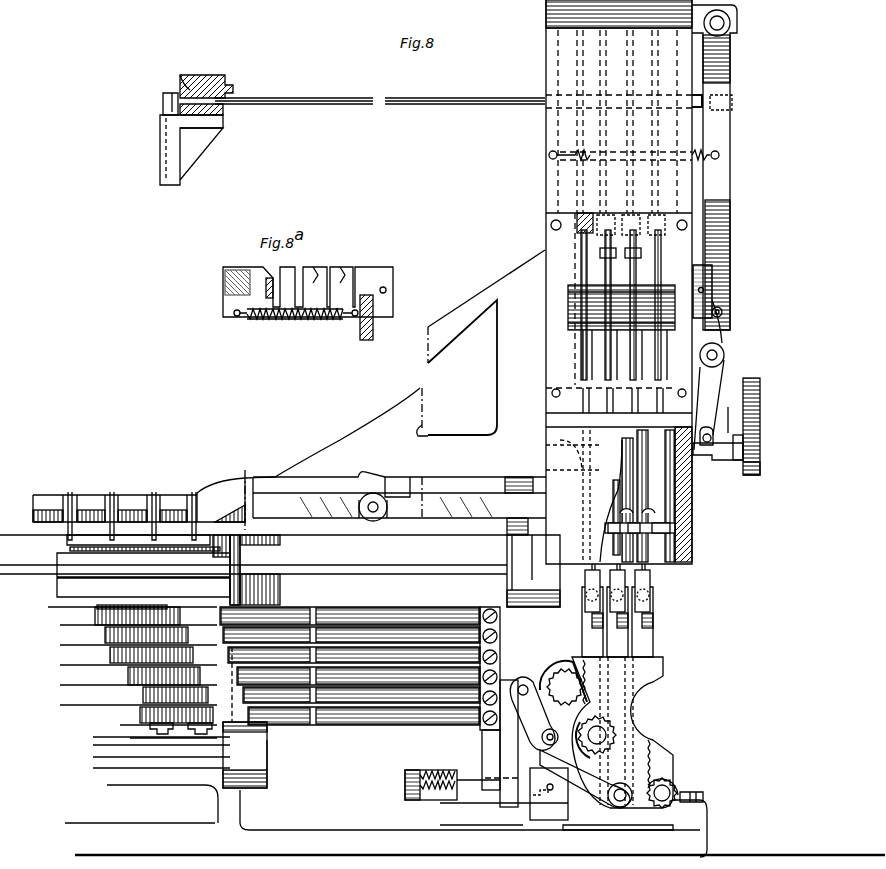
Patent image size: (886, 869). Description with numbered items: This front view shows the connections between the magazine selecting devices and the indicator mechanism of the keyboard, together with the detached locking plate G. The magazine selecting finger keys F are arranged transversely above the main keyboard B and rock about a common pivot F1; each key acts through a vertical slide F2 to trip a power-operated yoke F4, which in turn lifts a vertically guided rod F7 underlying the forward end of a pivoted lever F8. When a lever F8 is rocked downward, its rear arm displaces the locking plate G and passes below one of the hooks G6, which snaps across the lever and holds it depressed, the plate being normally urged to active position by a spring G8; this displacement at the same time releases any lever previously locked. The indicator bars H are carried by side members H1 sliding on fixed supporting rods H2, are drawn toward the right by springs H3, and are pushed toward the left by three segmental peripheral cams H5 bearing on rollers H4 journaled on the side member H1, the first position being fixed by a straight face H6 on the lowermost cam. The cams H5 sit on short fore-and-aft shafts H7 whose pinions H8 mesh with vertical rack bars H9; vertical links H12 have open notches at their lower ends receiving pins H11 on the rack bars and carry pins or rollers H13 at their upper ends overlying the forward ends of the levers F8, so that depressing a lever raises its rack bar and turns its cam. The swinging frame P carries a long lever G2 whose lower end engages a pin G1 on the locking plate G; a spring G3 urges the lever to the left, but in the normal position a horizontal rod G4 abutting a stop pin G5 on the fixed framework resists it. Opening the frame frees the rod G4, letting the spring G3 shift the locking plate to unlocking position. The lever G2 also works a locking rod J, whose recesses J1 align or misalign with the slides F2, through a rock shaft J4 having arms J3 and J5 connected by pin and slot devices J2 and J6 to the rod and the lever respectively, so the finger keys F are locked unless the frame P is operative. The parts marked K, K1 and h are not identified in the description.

In FIG. 8, the swinging frame P is at (205, 84).
In FIG. 8, the locking plate G is at (706, 280).
In FIG. 8A, the locking plate G is at (388, 273).
In FIG. 8, the pin G1 is at (705, 292).
In FIG. 8, the long lever G2 is at (718, 217).
In FIG. 8, the spring G3 is at (700, 152).
In FIG. 8, the horizontal rod G4 is at (440, 104).
In FIG. 8, the stop pin G5 is at (163, 105).
In FIG. 8A, the hooks G6 is at (313, 270).
In FIG. 8A, the spring G8 is at (290, 321).
In FIG. 8, the finger keys F is at (165, 498).
In FIG. 8, the common pivot F1 is at (368, 505).
In FIG. 8, the vertical slides F2 is at (630, 403).
In FIG. 8, the power-operated yokes F4 is at (607, 373).
In FIG. 8, the vertically guided rods F7 is at (607, 345).
In FIG. 8, the pivoted levers F8 is at (604, 267).
In FIG. 8A, the pivoted levers F8 is at (268, 288).
In FIG. 8, the locking rod J is at (588, 460).
In FIG. 8, the recesses J1 is at (688, 430).
In FIG. 8, the pin and slot device J2 is at (716, 437).
In FIG. 8, the arm J3 is at (713, 370).
In FIG. 8, the rock shaft J4 is at (723, 350).
In FIG. 8, the arm J5 is at (720, 325).
In FIG. 8, the pin and slot device J6 is at (722, 312).
In FIG. 8, the ratchet wheel K is at (762, 382).
In FIG. 8, the shaft K1 is at (760, 462).
In FIG. 8, the indicator bars H is at (348, 640).
In FIG. 8, the side members H1 is at (487, 748).
In FIG. 8, the fixed supporting rods H2 is at (518, 783).
In FIG. 8, the springs H3 is at (435, 800).
In FIG. 8, the rollers H4 is at (524, 682).
In FIG. 8, the segmental peripheral cams H5 is at (550, 668).
In FIG. 8, the straight face H6 is at (660, 810).
In FIG. 8, the fore-and-aft shafts H7 is at (590, 720).
In FIG. 8, the pinions H8 is at (680, 790).
In FIG. 8, the vertical rack bars H9 is at (643, 635).
In FIG. 8, the pins H11 is at (617, 593).
In FIG. 8, the vertical rods or links H12 is at (667, 557).
In FIG. 8, the laterally projecting pins or rollers H13 is at (628, 240).
In FIG. 8, the levers h is at (185, 633).
In FIG. 8, the main keyboard B is at (185, 738).